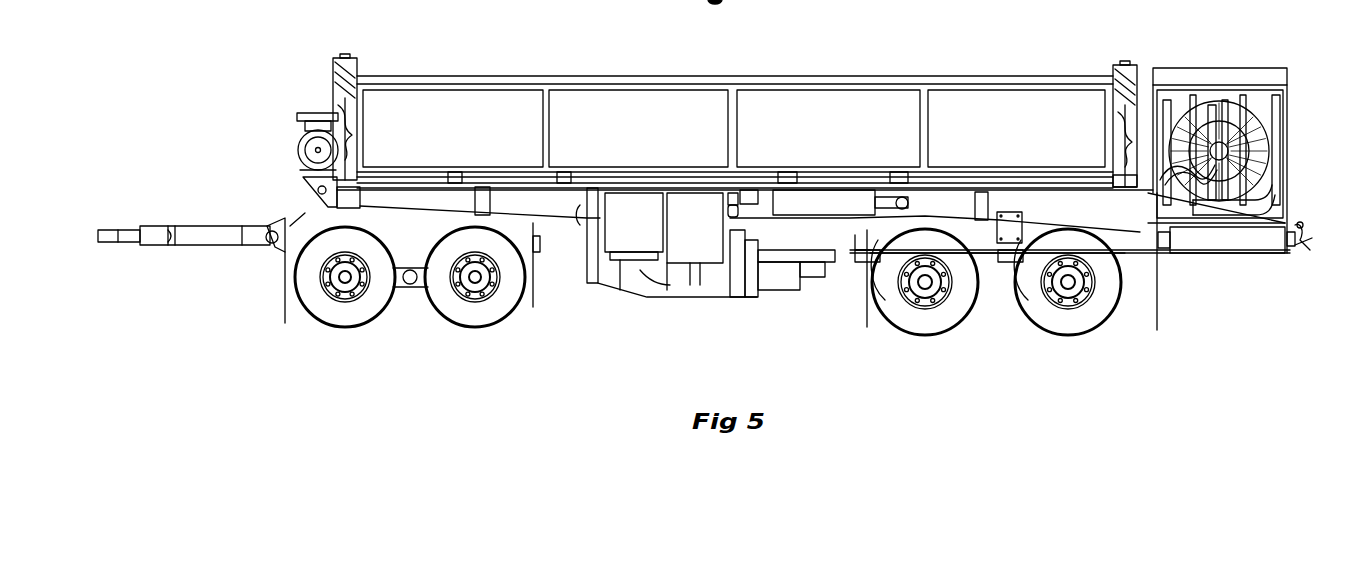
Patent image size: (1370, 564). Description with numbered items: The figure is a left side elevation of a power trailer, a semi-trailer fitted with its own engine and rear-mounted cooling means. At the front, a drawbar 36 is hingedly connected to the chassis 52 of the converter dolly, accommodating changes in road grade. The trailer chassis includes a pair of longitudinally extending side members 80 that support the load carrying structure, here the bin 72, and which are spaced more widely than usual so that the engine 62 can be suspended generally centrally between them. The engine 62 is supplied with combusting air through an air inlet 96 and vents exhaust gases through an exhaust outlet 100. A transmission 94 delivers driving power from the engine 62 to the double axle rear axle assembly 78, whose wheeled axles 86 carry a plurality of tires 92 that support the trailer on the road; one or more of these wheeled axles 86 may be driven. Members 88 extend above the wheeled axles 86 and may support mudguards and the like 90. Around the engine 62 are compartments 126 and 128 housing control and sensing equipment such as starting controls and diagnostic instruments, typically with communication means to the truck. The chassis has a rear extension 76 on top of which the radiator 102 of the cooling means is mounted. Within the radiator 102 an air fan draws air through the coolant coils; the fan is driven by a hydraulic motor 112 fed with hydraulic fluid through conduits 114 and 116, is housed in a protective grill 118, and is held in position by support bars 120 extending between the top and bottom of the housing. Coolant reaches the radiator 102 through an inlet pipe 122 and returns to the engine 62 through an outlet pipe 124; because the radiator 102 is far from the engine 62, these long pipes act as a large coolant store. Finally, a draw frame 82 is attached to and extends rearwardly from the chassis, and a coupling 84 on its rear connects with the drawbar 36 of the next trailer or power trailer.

The drawbar 36 is at (210, 233).
The chassis of the converter dolly 52 is at (310, 224).
The air inlet 96 is at (317, 112).
The bin 72 is at (968, 130).
The exhaust outlet 100 is at (808, 200).
The members 88 is at (1043, 222).
The inlet pipe 122 is at (1155, 118).
The hydraulic motor 112 is at (1210, 100).
The conduit 114 is at (1180, 120).
The support bars 120 is at (1243, 115).
The protective grill 118 is at (1265, 124).
The radiator 102 is at (1292, 150).
The compartment 126 is at (632, 228).
The engine 62 is at (693, 283).
The compartment 128 is at (700, 247).
The side members 80 is at (780, 228).
The transmission 94 is at (823, 255).
The wheeled axles 86 is at (921, 283).
The rear axle assembly 78 is at (983, 322).
The tires 92 is at (1090, 312).
The mudguards 90 is at (1157, 310).
The rear extension 76 is at (1262, 300).
The conduit 116 is at (1218, 232).
The outlet pipe 124 is at (1270, 210).
The draw frame 82 is at (1290, 240).
The coupling 84 is at (1302, 238).